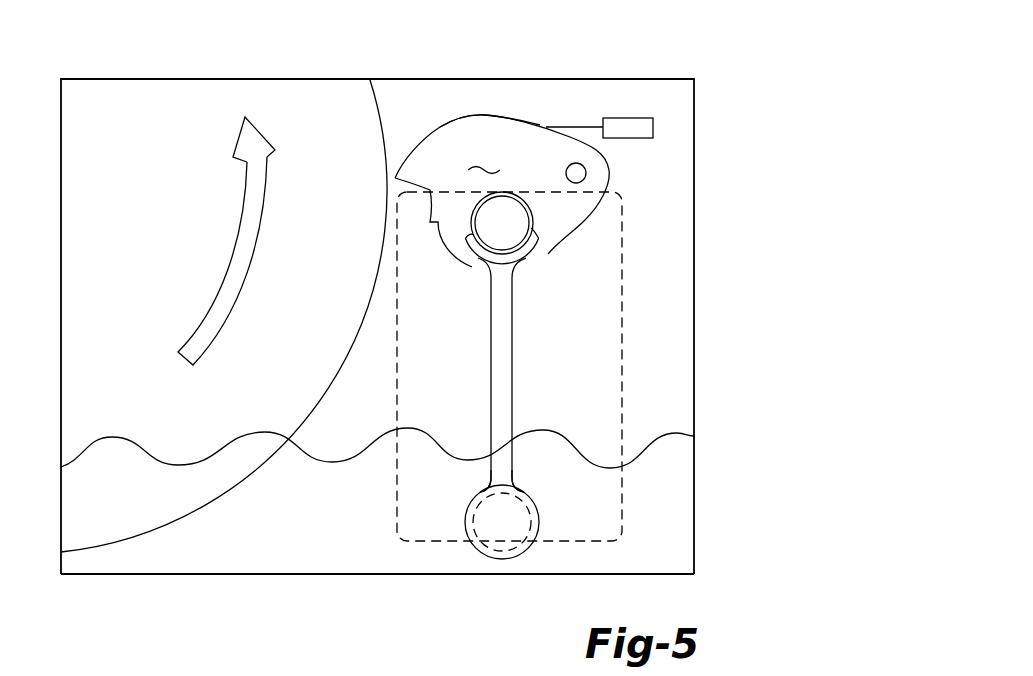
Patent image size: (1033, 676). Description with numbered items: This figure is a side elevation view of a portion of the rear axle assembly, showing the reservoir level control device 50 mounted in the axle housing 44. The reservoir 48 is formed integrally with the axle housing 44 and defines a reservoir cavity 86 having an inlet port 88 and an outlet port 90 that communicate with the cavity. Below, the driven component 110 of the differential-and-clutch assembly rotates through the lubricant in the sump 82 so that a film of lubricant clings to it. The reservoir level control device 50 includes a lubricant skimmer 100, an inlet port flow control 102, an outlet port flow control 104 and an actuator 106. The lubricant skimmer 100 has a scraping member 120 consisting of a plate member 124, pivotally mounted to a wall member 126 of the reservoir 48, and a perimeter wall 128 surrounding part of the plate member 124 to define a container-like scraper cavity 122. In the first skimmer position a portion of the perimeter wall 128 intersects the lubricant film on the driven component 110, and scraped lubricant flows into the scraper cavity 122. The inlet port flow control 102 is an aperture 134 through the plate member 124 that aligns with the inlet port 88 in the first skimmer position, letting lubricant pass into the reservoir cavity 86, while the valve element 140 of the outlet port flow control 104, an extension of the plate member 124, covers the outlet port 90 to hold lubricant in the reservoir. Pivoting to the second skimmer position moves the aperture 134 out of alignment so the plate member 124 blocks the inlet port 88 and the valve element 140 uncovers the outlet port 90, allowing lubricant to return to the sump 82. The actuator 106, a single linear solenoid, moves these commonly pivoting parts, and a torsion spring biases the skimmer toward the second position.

The axle housing 44 is at (694, 227).
The reservoir 48 is at (543, 366).
The reservoir level control device 50 is at (538, 327).
The sump 82 is at (333, 560).
The reservoir cavity 86 is at (602, 392).
The inlet port 88 is at (559, 436).
The outlet port 90 is at (508, 553).
The lubricant skimmer 100 is at (492, 192).
The inlet port flow control 102 is at (538, 240).
The outlet port flow control 104 is at (544, 497).
The actuator 106 is at (628, 118).
The driven component 110 is at (252, 475).
The scraping member 120 is at (393, 170).
The scraper cavity 122 is at (488, 157).
The plate member 124 is at (543, 183).
The wall member 126 is at (673, 145).
The perimeter wall 128 is at (460, 112).
The aperture 134 is at (532, 168).
The valve element 140 is at (539, 512).